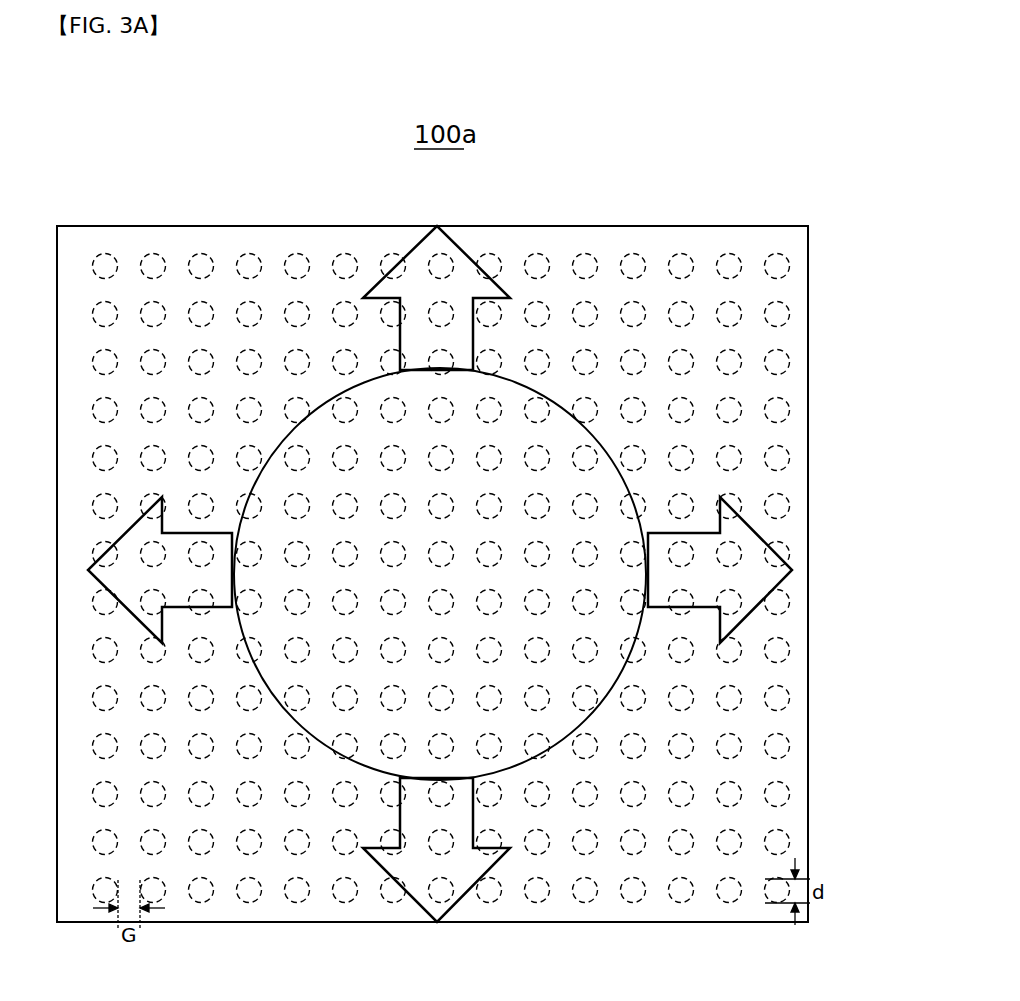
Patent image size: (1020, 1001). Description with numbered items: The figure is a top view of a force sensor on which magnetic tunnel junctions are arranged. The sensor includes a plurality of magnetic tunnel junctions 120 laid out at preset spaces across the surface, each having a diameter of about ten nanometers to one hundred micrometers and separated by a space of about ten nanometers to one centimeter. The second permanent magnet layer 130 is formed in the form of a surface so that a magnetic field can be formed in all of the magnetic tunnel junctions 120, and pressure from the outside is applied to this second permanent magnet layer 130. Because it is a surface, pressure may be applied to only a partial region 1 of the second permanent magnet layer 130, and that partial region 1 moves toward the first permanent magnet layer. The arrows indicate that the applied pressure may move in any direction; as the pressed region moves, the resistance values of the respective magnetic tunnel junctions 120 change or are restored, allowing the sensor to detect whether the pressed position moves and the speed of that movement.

The partial region 1 is at (610, 445).
The magnetic tunnel junctions 120 is at (767, 897).
The second permanent magnet layer 130 is at (795, 285).